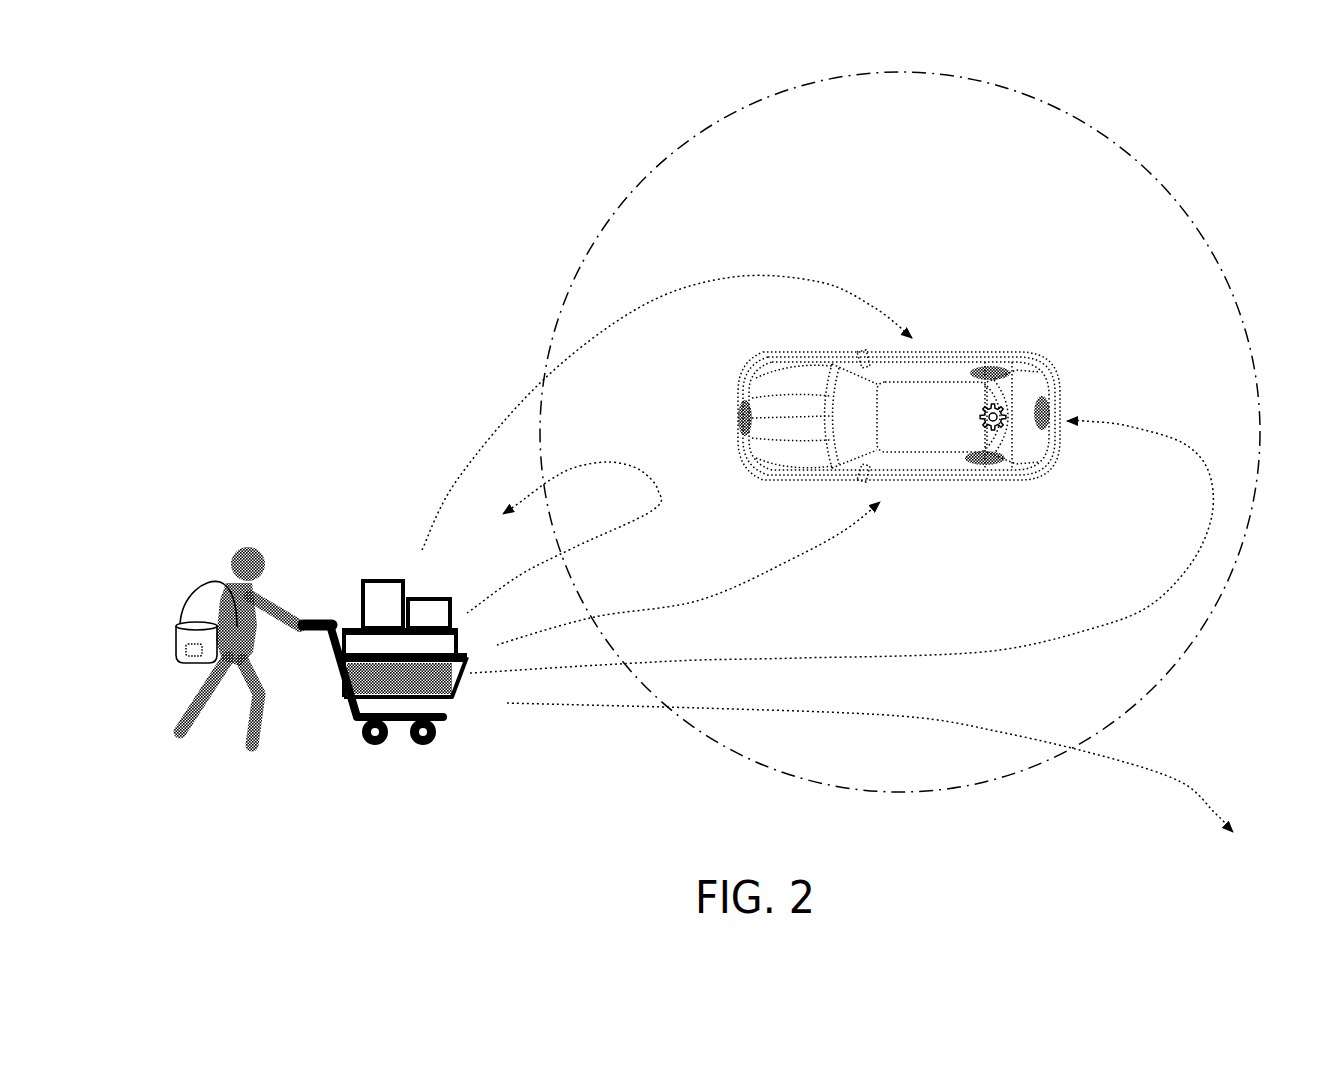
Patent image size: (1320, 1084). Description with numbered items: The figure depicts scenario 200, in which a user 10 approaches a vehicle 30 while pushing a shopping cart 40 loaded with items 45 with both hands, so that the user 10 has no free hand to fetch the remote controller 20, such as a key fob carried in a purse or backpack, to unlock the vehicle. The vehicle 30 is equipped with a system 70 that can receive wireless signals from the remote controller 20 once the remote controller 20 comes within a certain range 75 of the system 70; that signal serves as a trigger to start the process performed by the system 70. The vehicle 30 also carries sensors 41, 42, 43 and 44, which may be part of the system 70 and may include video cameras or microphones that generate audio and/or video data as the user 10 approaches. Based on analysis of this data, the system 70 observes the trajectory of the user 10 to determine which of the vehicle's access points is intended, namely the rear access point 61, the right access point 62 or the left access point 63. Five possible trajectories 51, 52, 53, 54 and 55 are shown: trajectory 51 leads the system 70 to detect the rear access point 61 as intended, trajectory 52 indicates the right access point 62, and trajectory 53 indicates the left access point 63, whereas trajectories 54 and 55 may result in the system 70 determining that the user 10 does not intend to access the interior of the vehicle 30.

The scenario 200 is at (369, 124).
The range 75 is at (598, 232).
The user 10 is at (238, 632).
The remote controller 20 is at (193, 664).
The shopping cart 40 is at (329, 694).
The items 45 is at (382, 578).
The vehicle 30 is at (899, 416).
The sensor 41 is at (1044, 398).
The sensor 42 is at (990, 372).
The sensor 43 is at (987, 467).
The sensor 44 is at (738, 428).
The rear access point 61 is at (1064, 442).
The right access point 62 is at (915, 353).
The left access point 63 is at (912, 481).
The system 70 is at (1005, 425).
The trajectory 51 is at (841, 547).
The trajectory 52 is at (667, 402).
The trajectory 53 is at (688, 573).
The trajectory 54 is at (564, 526).
The trajectory 55 is at (870, 767).